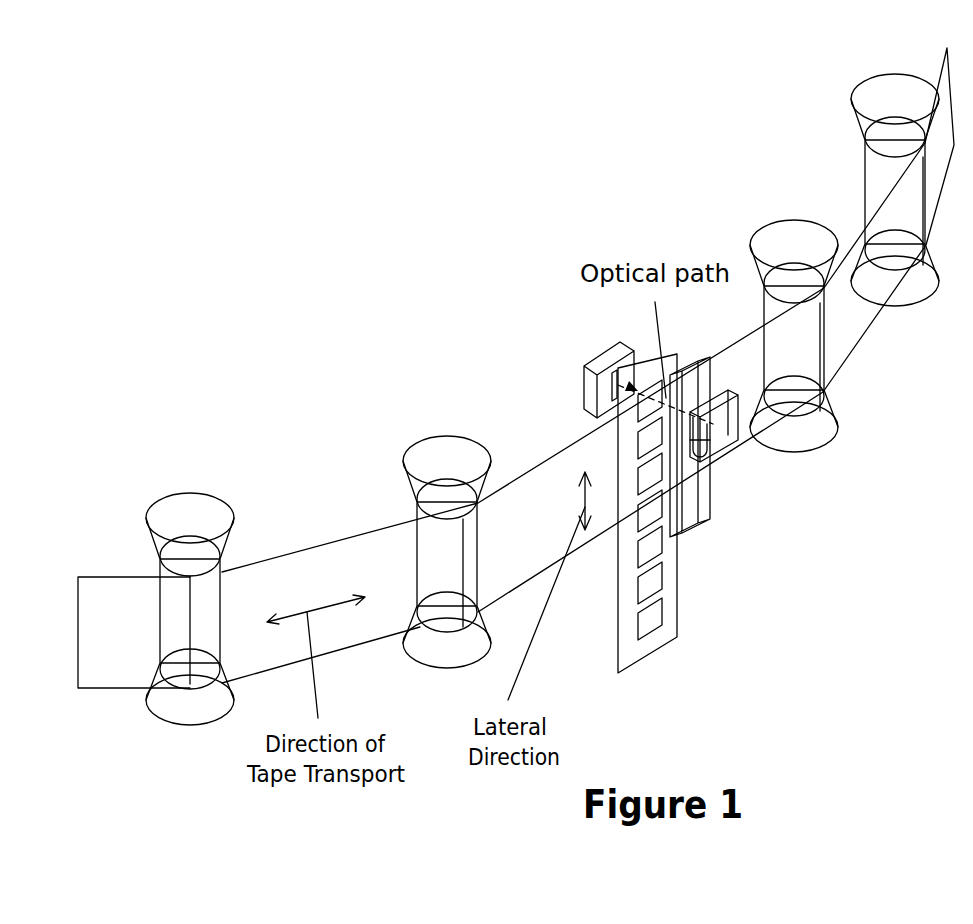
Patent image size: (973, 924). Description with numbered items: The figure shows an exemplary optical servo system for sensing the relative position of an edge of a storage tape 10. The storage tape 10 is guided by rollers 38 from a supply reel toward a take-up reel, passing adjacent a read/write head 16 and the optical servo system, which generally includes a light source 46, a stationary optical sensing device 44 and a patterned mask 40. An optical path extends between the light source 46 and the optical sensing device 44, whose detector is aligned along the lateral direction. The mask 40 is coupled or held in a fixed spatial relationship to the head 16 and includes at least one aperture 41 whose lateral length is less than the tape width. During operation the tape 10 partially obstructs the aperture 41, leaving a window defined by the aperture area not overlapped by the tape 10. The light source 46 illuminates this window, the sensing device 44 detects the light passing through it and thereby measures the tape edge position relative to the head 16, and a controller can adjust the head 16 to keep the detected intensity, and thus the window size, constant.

The rollers 38 is at (423, 440).
The storage tape 10 is at (527, 473).
The optical sensing device 44 is at (588, 393).
The aperture 41 is at (640, 397).
The patterned mask 40 is at (618, 607).
The read/write head 16 is at (710, 494).
The light source 46 is at (738, 432).